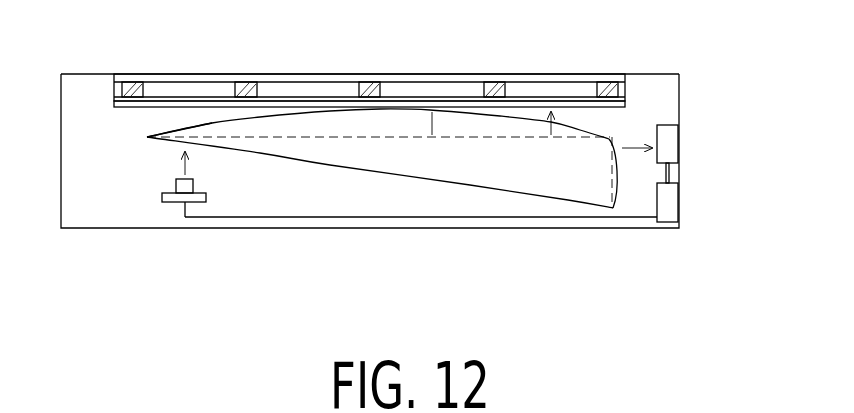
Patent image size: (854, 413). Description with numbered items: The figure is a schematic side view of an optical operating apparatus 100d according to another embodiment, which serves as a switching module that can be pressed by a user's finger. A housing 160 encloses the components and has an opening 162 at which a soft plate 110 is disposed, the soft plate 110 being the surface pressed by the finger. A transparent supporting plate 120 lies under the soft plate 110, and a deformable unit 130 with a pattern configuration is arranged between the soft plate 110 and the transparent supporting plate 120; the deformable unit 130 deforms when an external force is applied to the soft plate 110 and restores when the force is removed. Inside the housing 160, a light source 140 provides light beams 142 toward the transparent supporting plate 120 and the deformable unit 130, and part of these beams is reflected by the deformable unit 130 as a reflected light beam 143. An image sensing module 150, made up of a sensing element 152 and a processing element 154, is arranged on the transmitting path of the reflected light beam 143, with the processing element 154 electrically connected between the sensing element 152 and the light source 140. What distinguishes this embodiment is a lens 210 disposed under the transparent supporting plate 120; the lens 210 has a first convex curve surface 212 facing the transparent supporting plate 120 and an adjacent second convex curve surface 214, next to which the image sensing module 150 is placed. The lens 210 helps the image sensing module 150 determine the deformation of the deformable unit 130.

The optical operating apparatus 100d is at (665, 320).
The soft plate 110 is at (298, 77).
The transparent supporting plate 120 is at (620, 103).
The deformable unit 130 is at (610, 92).
The light source 140 is at (188, 187).
The light beams 142 is at (183, 162).
The light beam 143 is at (636, 146).
The image sensing module 150 is at (723, 173).
The sensing element 152 is at (678, 142).
The processing element 154 is at (678, 203).
The housing 160 is at (440, 229).
The opening 162 is at (623, 73).
The lens 210 is at (568, 195).
The first convex curve surface 212 is at (211, 121).
The second convex curve surface 214 is at (620, 197).